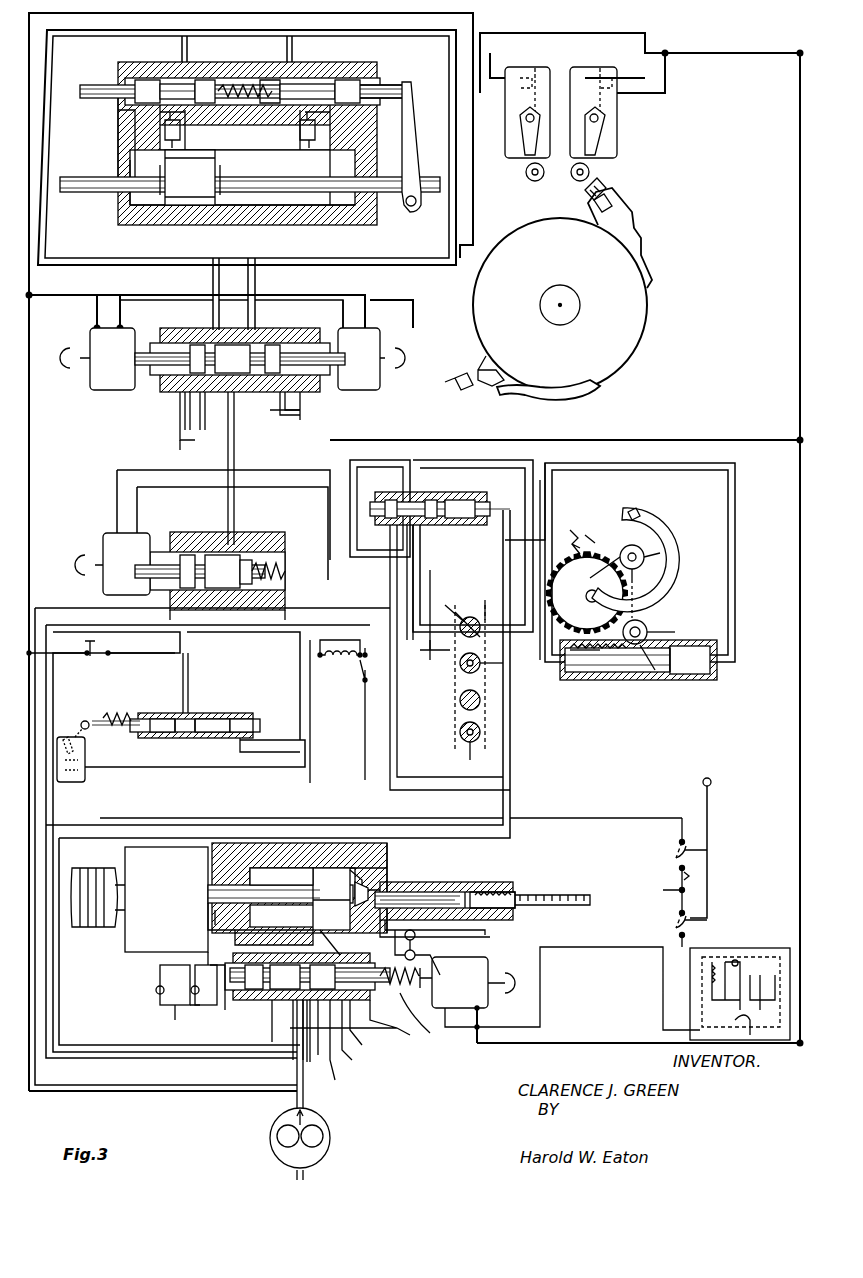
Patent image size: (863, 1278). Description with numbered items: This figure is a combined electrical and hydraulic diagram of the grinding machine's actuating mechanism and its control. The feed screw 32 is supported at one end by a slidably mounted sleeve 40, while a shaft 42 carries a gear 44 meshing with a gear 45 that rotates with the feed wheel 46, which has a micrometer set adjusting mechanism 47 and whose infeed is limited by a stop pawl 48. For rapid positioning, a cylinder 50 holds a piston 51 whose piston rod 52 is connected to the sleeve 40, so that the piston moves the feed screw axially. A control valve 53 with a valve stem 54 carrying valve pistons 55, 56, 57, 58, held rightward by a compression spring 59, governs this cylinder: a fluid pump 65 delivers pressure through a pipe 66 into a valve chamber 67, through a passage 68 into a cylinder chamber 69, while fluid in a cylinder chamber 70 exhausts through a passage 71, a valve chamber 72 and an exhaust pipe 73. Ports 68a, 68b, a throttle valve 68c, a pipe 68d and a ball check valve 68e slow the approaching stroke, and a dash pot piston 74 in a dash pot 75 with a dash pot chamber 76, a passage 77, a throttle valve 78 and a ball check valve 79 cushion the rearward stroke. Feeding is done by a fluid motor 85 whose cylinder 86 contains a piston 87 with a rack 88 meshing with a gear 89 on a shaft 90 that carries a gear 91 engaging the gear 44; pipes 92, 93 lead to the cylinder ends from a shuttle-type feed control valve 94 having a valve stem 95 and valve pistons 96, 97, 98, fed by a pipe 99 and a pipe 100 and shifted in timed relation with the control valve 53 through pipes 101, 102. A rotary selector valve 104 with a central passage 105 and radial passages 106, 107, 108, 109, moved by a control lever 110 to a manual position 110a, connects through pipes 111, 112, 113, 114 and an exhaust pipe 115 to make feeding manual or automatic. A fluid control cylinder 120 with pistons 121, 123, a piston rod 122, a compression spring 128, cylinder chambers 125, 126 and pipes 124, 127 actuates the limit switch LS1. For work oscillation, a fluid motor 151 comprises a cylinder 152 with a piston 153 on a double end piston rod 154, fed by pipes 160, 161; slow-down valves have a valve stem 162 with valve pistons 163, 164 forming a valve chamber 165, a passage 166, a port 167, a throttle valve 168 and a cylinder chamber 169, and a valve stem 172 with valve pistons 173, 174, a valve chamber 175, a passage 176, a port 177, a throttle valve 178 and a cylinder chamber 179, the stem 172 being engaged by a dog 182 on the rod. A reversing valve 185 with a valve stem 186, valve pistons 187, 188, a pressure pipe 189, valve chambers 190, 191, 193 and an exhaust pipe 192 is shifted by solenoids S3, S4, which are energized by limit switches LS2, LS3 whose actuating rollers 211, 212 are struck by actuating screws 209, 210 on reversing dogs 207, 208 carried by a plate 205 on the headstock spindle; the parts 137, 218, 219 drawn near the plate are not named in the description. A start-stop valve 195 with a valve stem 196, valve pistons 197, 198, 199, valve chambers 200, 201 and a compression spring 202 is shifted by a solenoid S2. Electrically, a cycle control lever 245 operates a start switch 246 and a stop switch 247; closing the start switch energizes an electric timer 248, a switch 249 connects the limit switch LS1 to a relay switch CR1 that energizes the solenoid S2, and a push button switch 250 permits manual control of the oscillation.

The feed screw 32 is at (85, 868).
The sleeve 40 is at (125, 945).
The shaft 42 is at (587, 593).
The gear 44 is at (650, 615).
The gear 45 is at (660, 553).
The feed wheel 46 is at (665, 520).
The micrometer set adjusting mechanism 47 is at (636, 508).
The stop pawl 48 is at (572, 540).
The cylinder 50 is at (220, 845).
The piston 51 is at (380, 860).
The piston rod 52 is at (208, 892).
The control valve 53 is at (357, 1023).
The valve stem 54 is at (426, 1016).
The valve piston 55 is at (250, 995).
The valve piston 56 is at (290, 1050).
The valve piston 57 is at (322, 1045).
The valve piston 58 is at (365, 1029).
The compression spring 59 is at (400, 988).
The fluid pump 65 is at (328, 1135).
The pipe 66 is at (305, 1100).
The valve chamber 67 is at (268, 1040).
The passage 68 is at (260, 995).
The port 68a is at (255, 940).
The port 68b is at (210, 918).
The throttle valve 68c is at (156, 988).
The pipe 68d is at (195, 995).
The ball check valve 68e is at (190, 990).
The cylinder chamber 69 is at (250, 875).
The cylinder chamber 70 is at (385, 880).
The passage 71 is at (335, 930).
The valve chamber 72 is at (353, 1040).
The exhaust pipe 73 is at (341, 1048).
The dash pot piston 74 is at (438, 892).
The dash pot 75 is at (478, 880).
The dash pot chamber 76 is at (505, 880).
The passage 77 is at (490, 920).
The throttle valve 78 is at (566, 960).
The ball check valve 79 is at (418, 948).
The fluid motor 85 is at (712, 682).
The cylinder 86 is at (688, 680).
The piston 87 is at (585, 680).
The rack 88 is at (615, 680).
The gear 89 is at (655, 680).
The shaft 90 is at (672, 631).
The gear 91 is at (646, 628).
The pipe 92 is at (480, 468).
The pipe 93 is at (565, 470).
The feed control valve 94 is at (372, 490).
The valve stem 95 is at (385, 508).
The valve piston 96 is at (395, 500).
The valve piston 97 is at (430, 500).
The valve piston 98 is at (455, 500).
The pipe 99 is at (80, 608).
The pipe 100 is at (435, 600).
The pipe 101 is at (503, 556).
The pipe 102 is at (165, 1072).
The selector valve 104 is at (455, 722).
The central passage 105 is at (480, 732).
The passage 106 is at (470, 617).
The passage 107 is at (460, 664).
The passage 108 is at (460, 698).
The passage 109 is at (488, 758).
The control lever 110 is at (453, 614).
The manual position 110a is at (500, 593).
The pipe 111 is at (418, 560).
The pipe 112 is at (510, 470).
The pipe 113 is at (398, 470).
The pipe 114 is at (425, 646).
The exhaust pipe 115 is at (509, 664).
The fluid control cylinder 120 is at (150, 713).
The piston 121 is at (150, 720).
The piston rod 122 is at (105, 722).
The piston 123 is at (220, 715).
The pipe 124 is at (190, 667).
The cylinder chamber 125 is at (185, 732).
The cylinder chamber 126 is at (250, 716).
The pipe 127 is at (285, 752).
The compression spring 128 is at (110, 732).
The shaft 137 is at (565, 308).
The fluid motor 151 is at (345, 225).
The fluid pressure cylinder 152 is at (280, 210).
The piston 153 is at (195, 205).
The double end piston rod 154 is at (90, 192).
The pipe 160 is at (122, 30).
The pipe 161 is at (445, 32).
The valve stem 162 is at (95, 88).
The valve piston 163 is at (147, 80).
The valve piston 164 is at (207, 80).
The valve chamber 165 is at (185, 80).
The passage 166 is at (160, 116).
The port 167 is at (192, 118).
The throttle valve 168 is at (165, 132).
The cylinder chamber 169 is at (140, 205).
The valve stem 172 is at (395, 85).
The valve piston 173 is at (347, 80).
The valve piston 174 is at (272, 80).
The valve chamber 175 is at (303, 80).
The passage 176 is at (330, 116).
The port 177 is at (297, 118).
The throttle valve 178 is at (315, 132).
The cylinder chamber 179 is at (328, 205).
The dog 182 is at (414, 140).
The reversing valve 185 is at (160, 392).
The valve stem 186 is at (152, 345).
The valve piston 187 is at (205, 345).
The valve piston 188 is at (255, 345).
The pressure pipe 189 is at (234, 460).
The valve chamber 190 is at (210, 410).
The valve chamber 191 is at (290, 380).
The exhaust pipe 192 is at (280, 438).
The valve chamber 193 is at (173, 416).
The start-stop valve 195 is at (280, 532).
The valve stem 196 is at (160, 552).
The valve piston 197 is at (185, 555).
The valve piston 198 is at (220, 555).
The valve piston 199 is at (250, 560).
The valve chamber 200 is at (188, 607).
The valve chamber 201 is at (270, 607).
The compression spring 202 is at (280, 570).
The plate 205 is at (628, 338).
The reversing dog 207 is at (600, 395).
The reversing dog 208 is at (652, 262).
The actuating screw 209 is at (455, 381).
The actuating screw 210 is at (605, 180).
The actuating roller 211 is at (530, 180).
The actuating roller 212 is at (590, 170).
The cam lobe 218 is at (480, 368).
The cam lobe 219 is at (595, 213).
The cycle control lever 245 is at (711, 812).
The start switch 246 is at (712, 927).
The stop switch 247 is at (678, 848).
The electric timer 248 is at (690, 995).
The switch 249 is at (360, 705).
The push button switch 250 is at (101, 658).
The relay switch CR1 is at (336, 711).
The limit switch LS1 is at (69, 747).
The limit switch LS2 is at (505, 155).
The limit switch LS3 is at (612, 122).
The solenoid S2 is at (112, 564).
The solenoid S3 is at (97, 359).
The solenoid S4 is at (371, 359).